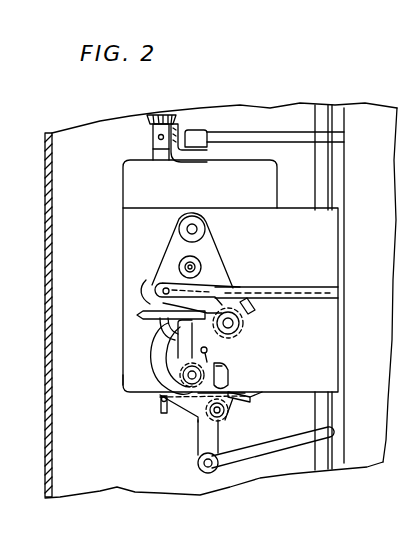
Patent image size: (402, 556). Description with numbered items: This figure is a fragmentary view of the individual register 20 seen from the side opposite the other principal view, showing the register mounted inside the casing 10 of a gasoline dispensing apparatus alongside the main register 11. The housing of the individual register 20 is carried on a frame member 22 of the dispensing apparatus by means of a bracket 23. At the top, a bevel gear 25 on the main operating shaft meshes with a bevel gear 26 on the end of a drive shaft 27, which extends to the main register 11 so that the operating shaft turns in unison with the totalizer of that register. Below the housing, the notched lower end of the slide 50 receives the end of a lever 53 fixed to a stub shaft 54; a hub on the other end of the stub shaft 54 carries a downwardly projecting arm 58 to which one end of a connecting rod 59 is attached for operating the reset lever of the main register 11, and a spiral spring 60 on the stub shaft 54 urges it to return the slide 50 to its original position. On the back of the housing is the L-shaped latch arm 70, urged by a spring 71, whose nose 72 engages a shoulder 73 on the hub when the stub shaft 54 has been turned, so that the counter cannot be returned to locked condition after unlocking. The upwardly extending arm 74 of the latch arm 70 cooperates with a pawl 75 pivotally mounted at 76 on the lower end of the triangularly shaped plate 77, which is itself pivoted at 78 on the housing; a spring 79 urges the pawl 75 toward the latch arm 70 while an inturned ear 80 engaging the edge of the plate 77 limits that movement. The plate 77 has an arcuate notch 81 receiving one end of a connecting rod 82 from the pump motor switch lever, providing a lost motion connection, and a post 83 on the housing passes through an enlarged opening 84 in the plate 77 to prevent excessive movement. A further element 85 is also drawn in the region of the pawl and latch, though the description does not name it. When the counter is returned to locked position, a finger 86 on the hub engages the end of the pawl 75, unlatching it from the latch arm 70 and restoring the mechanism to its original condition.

The casing 10 is at (46, 140).
The register 11 is at (372, 113).
The individual register 20 is at (119, 171).
The frame member 22 is at (331, 106).
The bracket 23 is at (130, 373).
The bevel gear 25 is at (156, 116).
The bevel gear 26 is at (181, 126).
The drive shaft 27 is at (248, 138).
The slide 50 is at (160, 410).
The lever 53 is at (188, 415).
The stub shaft 54 is at (228, 411).
The arm 58 is at (203, 452).
The connecting rod 59 is at (328, 428).
The spiral spring 60 is at (251, 400).
The latch arm 70 is at (237, 379).
The spring 71 is at (209, 364).
The nose 72 is at (231, 370).
The shoulder 73 is at (231, 393).
The upwardly extending arm 74 is at (186, 357).
The pawl 75 is at (130, 319).
The pivot 76 is at (254, 311).
The triangularly shaped plate 77 is at (168, 229).
The pivot 78 is at (193, 224).
The spring 79 is at (243, 326).
The inturned ear 80 is at (244, 301).
The arcuate notch 81 is at (140, 289).
The connecting rod 82 is at (293, 288).
The post 83 is at (196, 262).
The enlarged opening 84 is at (180, 265).
The hook 85 is at (166, 330).
The finger 86 is at (184, 342).